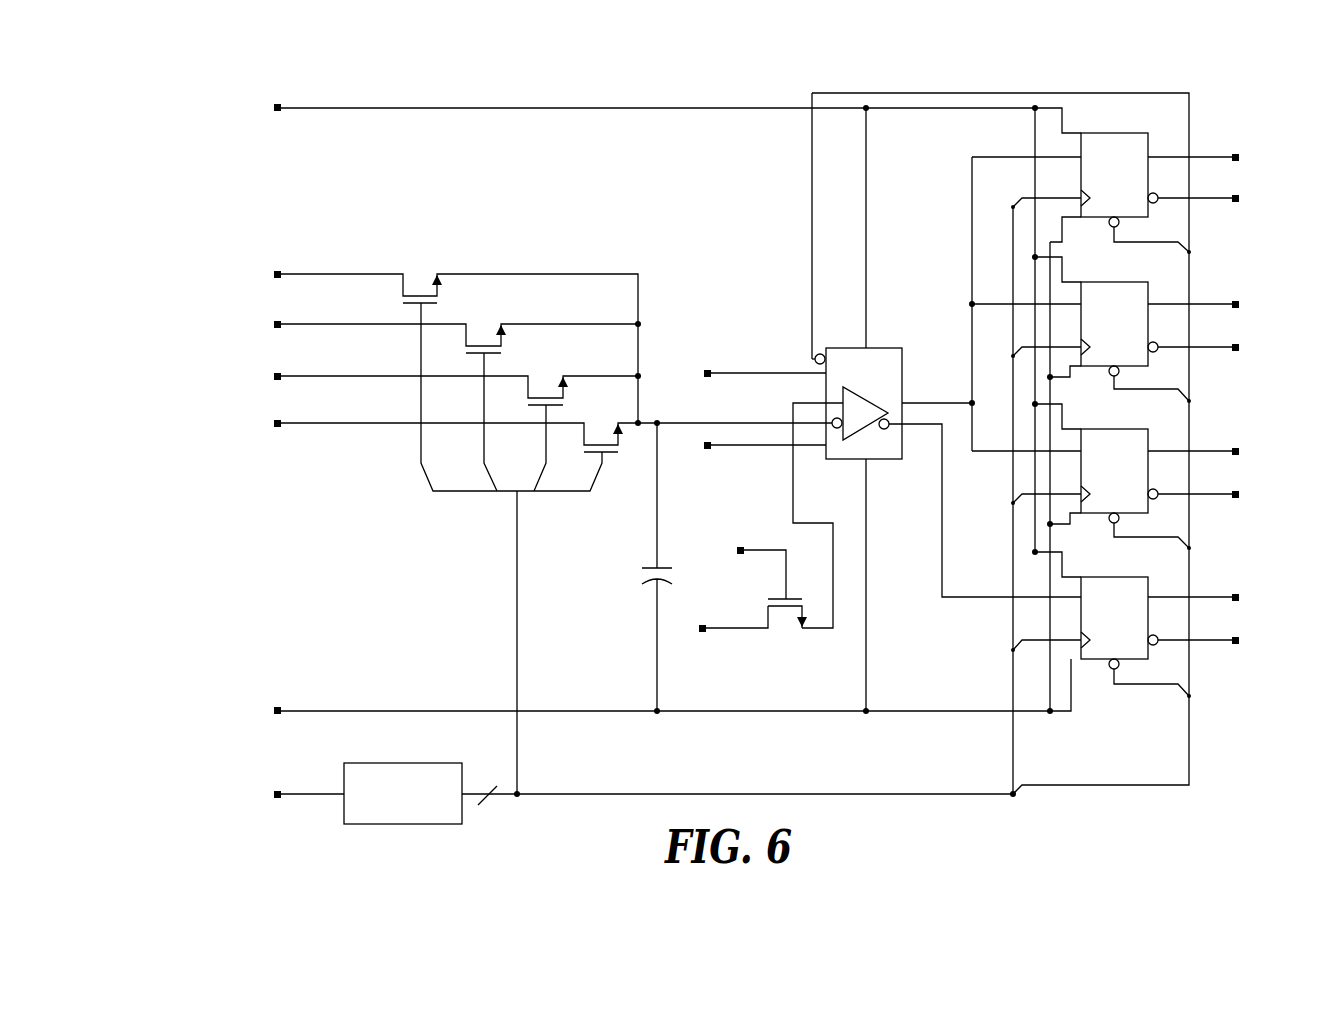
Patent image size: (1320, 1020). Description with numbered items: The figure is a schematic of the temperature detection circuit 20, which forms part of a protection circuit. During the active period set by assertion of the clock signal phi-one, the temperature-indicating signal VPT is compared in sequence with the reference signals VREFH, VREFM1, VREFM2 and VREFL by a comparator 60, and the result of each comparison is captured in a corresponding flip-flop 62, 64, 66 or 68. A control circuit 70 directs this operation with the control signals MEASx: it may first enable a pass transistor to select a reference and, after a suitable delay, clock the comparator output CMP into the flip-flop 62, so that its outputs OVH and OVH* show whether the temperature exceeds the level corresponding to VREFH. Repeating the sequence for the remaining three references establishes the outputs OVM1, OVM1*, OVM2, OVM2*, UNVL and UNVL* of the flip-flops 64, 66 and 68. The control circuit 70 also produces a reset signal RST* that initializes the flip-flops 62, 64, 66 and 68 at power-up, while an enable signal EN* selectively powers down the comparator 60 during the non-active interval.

The temperature detection circuit 20 is at (550, 72).
The comparator 60 is at (888, 348).
The flip-flop 62 is at (1112, 133).
The flip-flop 64 is at (1112, 282).
The flip-flop 66 is at (1112, 429).
The flip-flop 68 is at (1112, 577).
The control circuit 70 is at (407, 763).